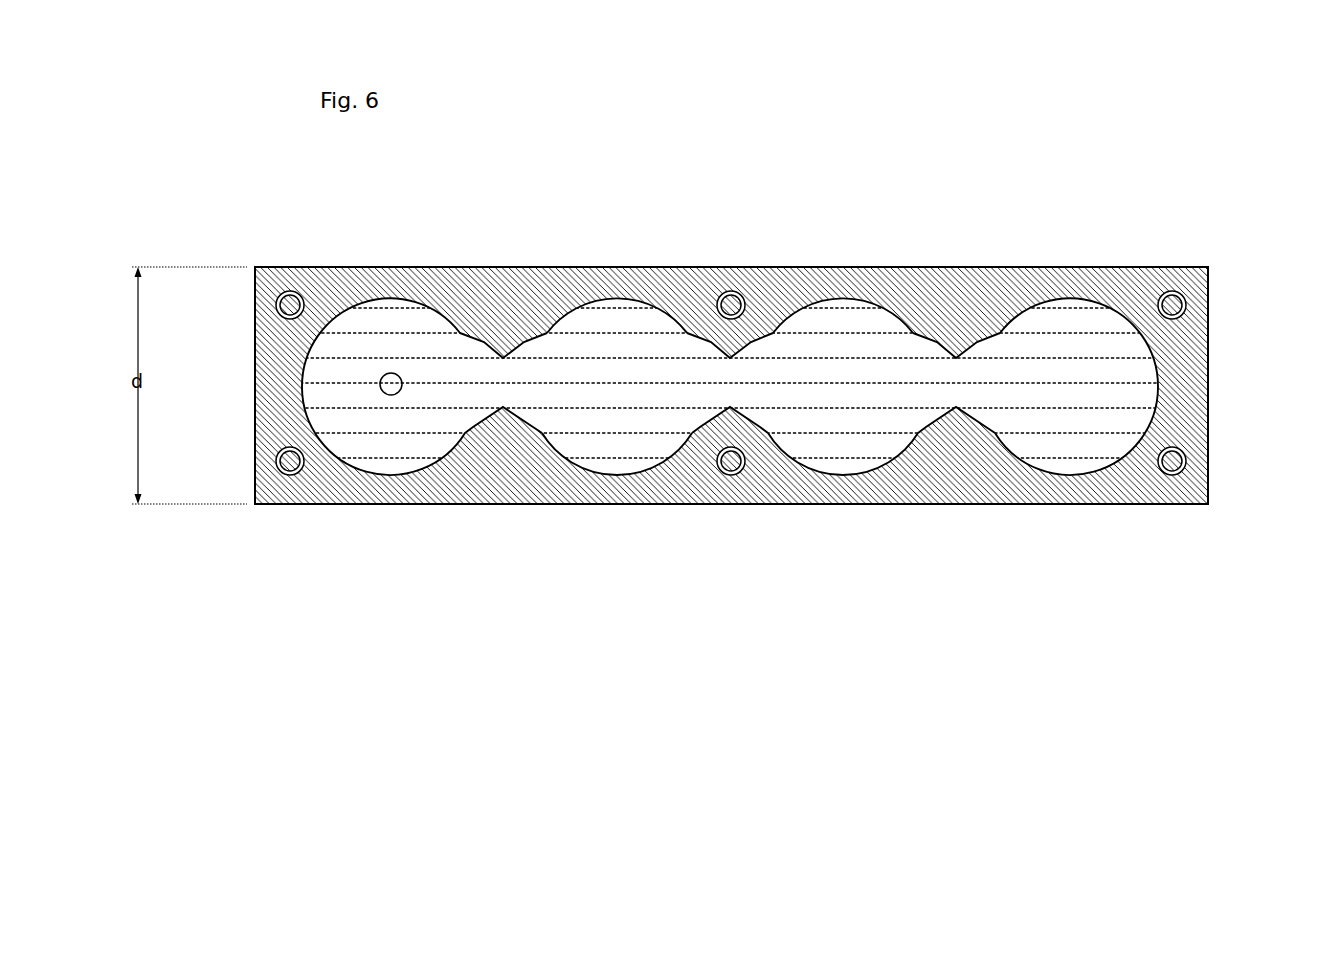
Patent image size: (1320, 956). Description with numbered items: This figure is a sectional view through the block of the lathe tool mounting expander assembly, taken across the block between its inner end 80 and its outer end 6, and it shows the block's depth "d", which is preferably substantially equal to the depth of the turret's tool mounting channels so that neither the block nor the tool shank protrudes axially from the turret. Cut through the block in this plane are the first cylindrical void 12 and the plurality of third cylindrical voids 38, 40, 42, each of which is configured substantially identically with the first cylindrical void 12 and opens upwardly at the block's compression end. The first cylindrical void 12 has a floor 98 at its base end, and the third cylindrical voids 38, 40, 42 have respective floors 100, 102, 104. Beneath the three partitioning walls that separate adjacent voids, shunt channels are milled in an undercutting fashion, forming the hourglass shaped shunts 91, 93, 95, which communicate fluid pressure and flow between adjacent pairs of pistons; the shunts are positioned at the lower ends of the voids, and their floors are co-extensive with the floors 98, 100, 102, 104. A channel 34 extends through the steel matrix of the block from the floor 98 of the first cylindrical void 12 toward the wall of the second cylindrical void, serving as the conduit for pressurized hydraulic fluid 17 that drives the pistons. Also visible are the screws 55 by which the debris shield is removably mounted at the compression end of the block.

The outer end 6 is at (1208, 401).
The first cylindrical void 12 is at (392, 338).
The pressurized hydraulic fluid 17 is at (617, 432).
The channel 34 is at (397, 395).
The third cylindrical void 38 is at (602, 330).
The third cylindrical void 40 is at (825, 348).
The third cylindrical void 42 is at (1061, 343).
The screws 55 is at (290, 292).
The inner end 80 is at (255, 310).
The hourglass shaped shunt 91 is at (505, 382).
The hourglass shaped shunt 93 is at (733, 388).
The hourglass shaped shunt 95 is at (957, 388).
The floor 98 is at (372, 448).
The floor 100 is at (583, 435).
The floor 102 is at (872, 440).
The floor 104 is at (1072, 452).